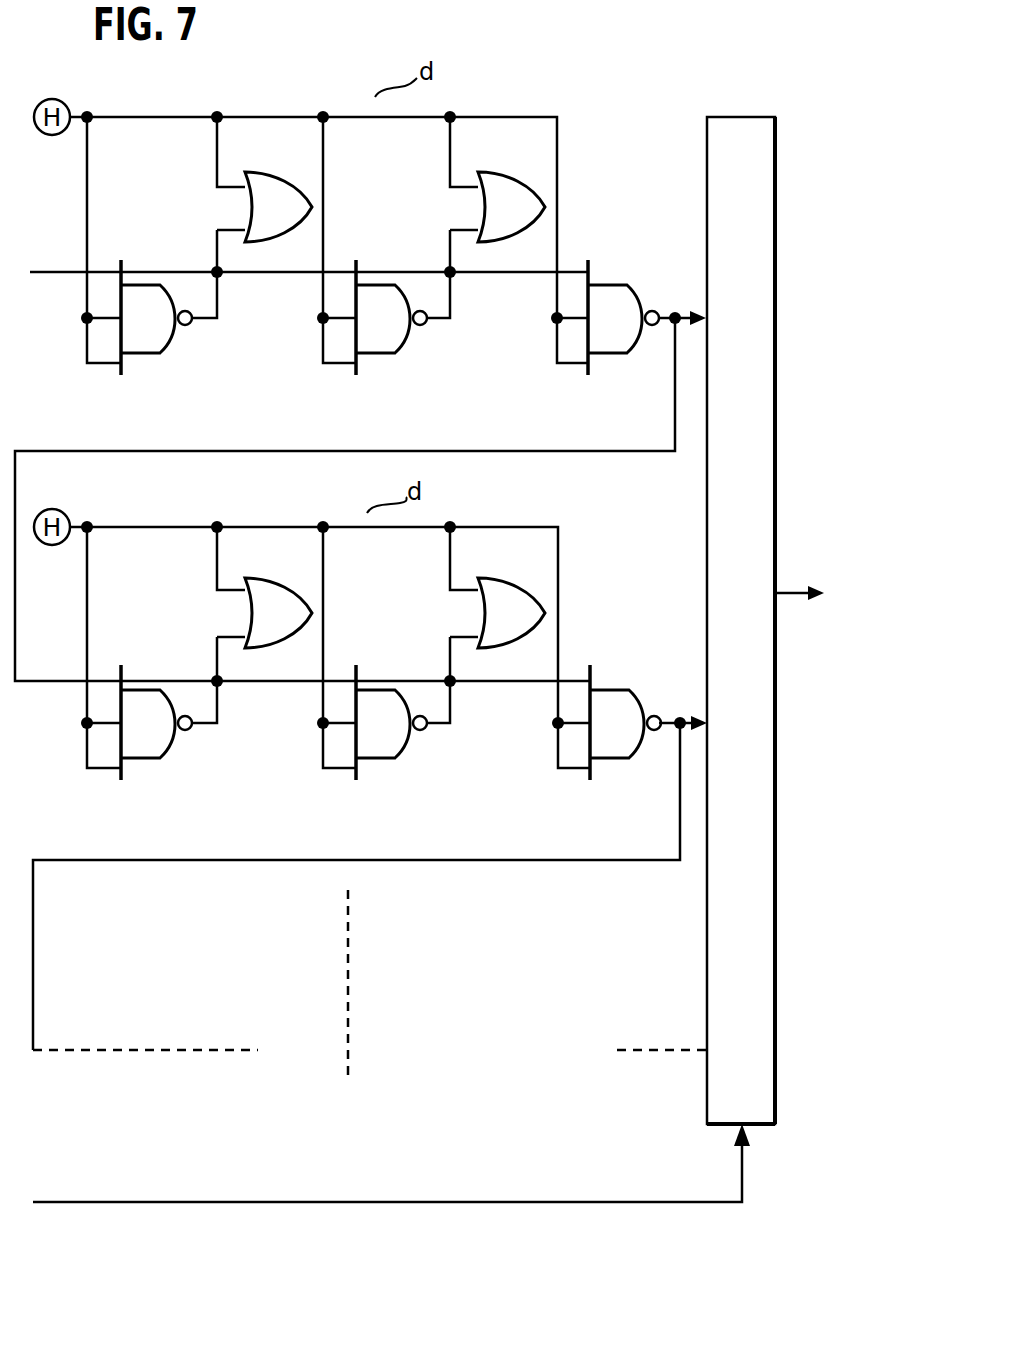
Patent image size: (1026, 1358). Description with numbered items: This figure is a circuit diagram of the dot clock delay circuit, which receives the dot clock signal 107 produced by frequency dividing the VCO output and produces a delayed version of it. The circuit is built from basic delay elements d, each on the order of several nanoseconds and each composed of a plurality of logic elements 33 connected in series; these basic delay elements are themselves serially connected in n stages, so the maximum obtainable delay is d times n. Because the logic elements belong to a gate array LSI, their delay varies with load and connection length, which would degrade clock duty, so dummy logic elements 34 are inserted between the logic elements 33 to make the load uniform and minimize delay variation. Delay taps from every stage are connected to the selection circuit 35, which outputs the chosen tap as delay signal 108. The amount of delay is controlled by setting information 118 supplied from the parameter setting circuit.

The dot clock signal 107 is at (69, 245).
The logic elements 33 is at (155, 354).
The dummy logic elements 34 is at (310, 158).
The selection circuit 35 is at (773, 77).
The delay signal 108 is at (792, 592).
The setting information 118 is at (180, 1202).